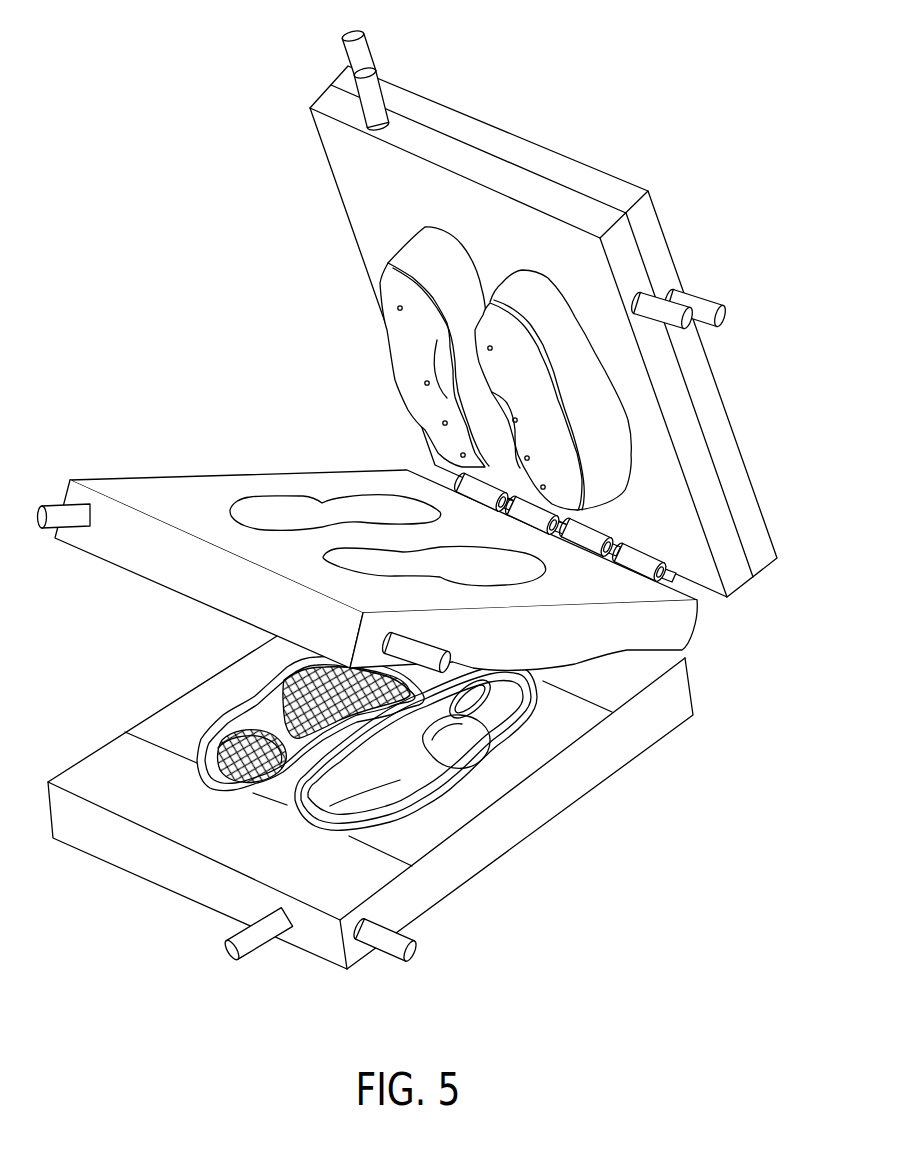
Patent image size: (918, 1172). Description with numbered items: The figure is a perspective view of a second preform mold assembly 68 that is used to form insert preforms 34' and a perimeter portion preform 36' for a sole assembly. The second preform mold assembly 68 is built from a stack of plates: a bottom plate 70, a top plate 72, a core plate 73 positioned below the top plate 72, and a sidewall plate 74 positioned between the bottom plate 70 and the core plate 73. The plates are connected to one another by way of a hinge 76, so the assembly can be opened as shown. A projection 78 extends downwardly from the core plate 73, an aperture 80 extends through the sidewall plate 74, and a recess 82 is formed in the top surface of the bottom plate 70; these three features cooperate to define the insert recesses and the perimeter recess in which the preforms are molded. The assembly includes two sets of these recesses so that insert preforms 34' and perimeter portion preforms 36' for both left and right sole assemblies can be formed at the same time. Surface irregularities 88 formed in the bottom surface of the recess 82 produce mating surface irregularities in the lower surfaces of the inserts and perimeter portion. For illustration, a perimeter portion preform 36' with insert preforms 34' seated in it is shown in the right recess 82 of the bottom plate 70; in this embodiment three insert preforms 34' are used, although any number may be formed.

The second preform mold assembly 68 is at (266, 294).
The bottom plate 70 is at (680, 695).
The top plate 72 is at (708, 381).
The core plate 73 is at (628, 257).
The sidewall plate 74 is at (143, 477).
The hinge 76 is at (673, 575).
The projection 78 is at (397, 343).
The aperture 80 is at (358, 505).
The recess 82 is at (260, 713).
The surface irregularities 88 is at (245, 778).
The insert preform 34' is at (502, 720).
The perimeter portion preform 36' is at (416, 747).